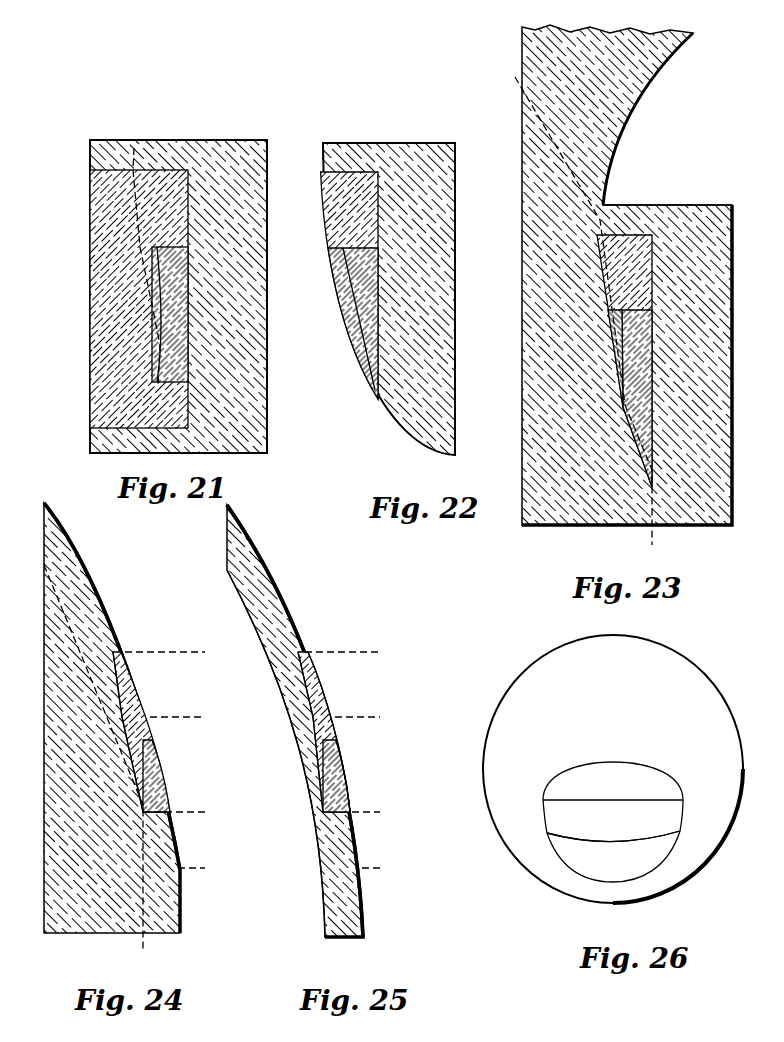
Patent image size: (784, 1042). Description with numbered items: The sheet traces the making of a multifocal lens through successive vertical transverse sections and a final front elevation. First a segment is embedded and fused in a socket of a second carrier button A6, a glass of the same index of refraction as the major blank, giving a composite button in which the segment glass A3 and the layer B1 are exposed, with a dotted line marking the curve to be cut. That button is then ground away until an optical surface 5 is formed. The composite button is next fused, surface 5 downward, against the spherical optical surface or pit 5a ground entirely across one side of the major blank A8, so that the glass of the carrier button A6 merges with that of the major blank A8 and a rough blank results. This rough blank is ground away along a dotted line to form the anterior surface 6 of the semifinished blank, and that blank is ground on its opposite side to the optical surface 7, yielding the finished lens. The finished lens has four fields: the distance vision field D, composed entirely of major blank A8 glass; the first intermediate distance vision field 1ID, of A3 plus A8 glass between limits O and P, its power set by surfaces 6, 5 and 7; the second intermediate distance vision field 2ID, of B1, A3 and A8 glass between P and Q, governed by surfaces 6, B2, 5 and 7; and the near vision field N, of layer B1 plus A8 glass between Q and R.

In FIG. 21, the optical surface 5 is at (133, 148).
In FIG. 22, the optical surface 5 is at (323, 152).
In FIG. 24, the optical surface 5 is at (125, 692).
In FIG. 25, the optical surface 5 is at (297, 680).
In FIG. 23, the spherical optical surface or pit 5a is at (621, 147).
In FIG. 23, the anterior surface 6 is at (577, 313).
In FIG. 24, the anterior surface 6 is at (78, 546).
In FIG. 25, the anterior surface 6 is at (250, 538).
In FIG. 24, the optical surface 7 is at (87, 758).
In FIG. 25, the optical surface 7 is at (240, 593).
In FIG. 21, the segment glass A3 is at (112, 200).
In FIG. 22, the segment glass A3 is at (338, 200).
In FIG. 23, the segment glass A3 is at (628, 232).
In FIG. 24, the segment glass A3 is at (125, 665).
In FIG. 25, the segment glass A3 is at (303, 668).
In FIG. 21, the second carrier button A6 is at (224, 150).
In FIG. 22, the second carrier button A6 is at (417, 160).
In FIG. 23, the second carrier button A6 is at (709, 205).
In FIG. 23, the major blank A8 is at (612, 107).
In FIG. 24, the major blank A8 is at (85, 600).
In FIG. 25, the major blank A8 is at (272, 605).
In FIG. 21, the layer of composite segment B1 is at (170, 263).
In FIG. 22, the layer of composite segment B1 is at (373, 352).
In FIG. 23, the layer of composite segment B1 is at (632, 373).
In FIG. 24, the layer of composite segment B1 is at (150, 780).
In FIG. 25, the layer of composite segment B1 is at (337, 798).
In FIG. 21, the optical surface B2 is at (158, 345).
In FIG. 22, the optical surface B2 is at (345, 284).
In FIG. 23, the optical surface B2 is at (628, 345).
In FIG. 24, the optical surface B2 is at (135, 740).
In FIG. 25, the optical surface B2 is at (322, 740).
In FIG. 25, the distance vision field D is at (265, 561).
In FIG. 26, the distance vision field D is at (565, 678).
In FIG. 25, the first intermediate distance vision field 1ID is at (312, 694).
In FIG. 26, the first intermediate distance vision field 1ID is at (595, 778).
In FIG. 25, the second intermediate distance vision field 2ID is at (340, 762).
In FIG. 26, the second intermediate distance vision field 2ID is at (588, 815).
In FIG. 25, the near vision field N is at (352, 840).
In FIG. 26, the near vision field N is at (590, 852).
In FIG. 24, the upper limit of first intermediate field O is at (172, 652).
In FIG. 25, the upper limit of first intermediate field O is at (350, 652).
In FIG. 24, the limit between first and second intermediate fields P is at (184, 717).
In FIG. 25, the limit between first and second intermediate fields P is at (364, 717).
In FIG. 24, the limit between second intermediate field and near field Q is at (181, 812).
In FIG. 25, the limit between second intermediate field and near field Q is at (373, 812).
In FIG. 24, the lower limit of near vision field R is at (198, 868).
In FIG. 25, the lower limit of near vision field R is at (377, 868).